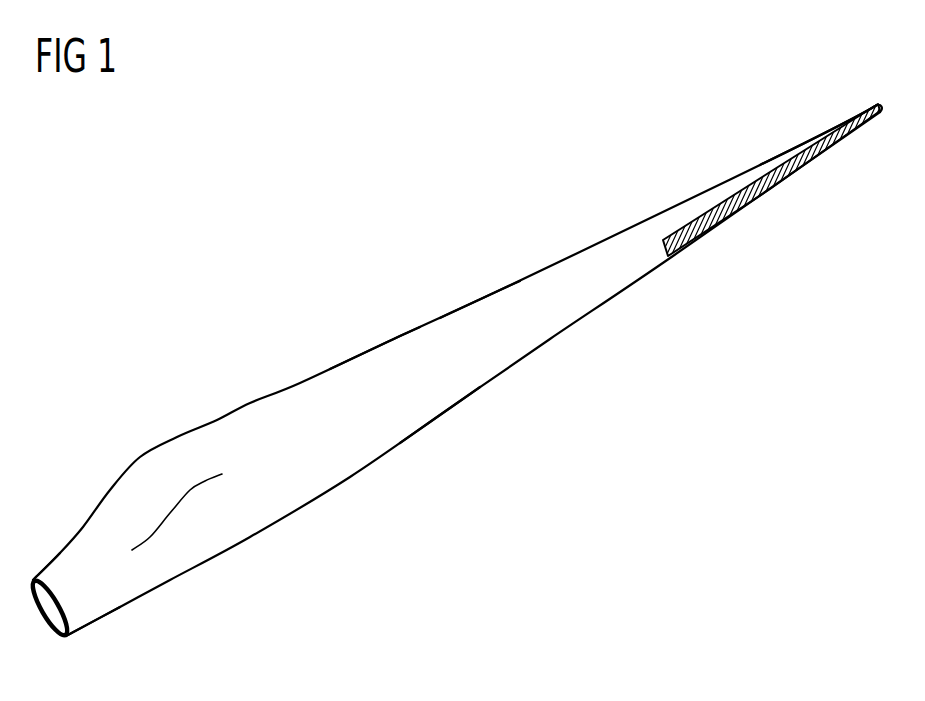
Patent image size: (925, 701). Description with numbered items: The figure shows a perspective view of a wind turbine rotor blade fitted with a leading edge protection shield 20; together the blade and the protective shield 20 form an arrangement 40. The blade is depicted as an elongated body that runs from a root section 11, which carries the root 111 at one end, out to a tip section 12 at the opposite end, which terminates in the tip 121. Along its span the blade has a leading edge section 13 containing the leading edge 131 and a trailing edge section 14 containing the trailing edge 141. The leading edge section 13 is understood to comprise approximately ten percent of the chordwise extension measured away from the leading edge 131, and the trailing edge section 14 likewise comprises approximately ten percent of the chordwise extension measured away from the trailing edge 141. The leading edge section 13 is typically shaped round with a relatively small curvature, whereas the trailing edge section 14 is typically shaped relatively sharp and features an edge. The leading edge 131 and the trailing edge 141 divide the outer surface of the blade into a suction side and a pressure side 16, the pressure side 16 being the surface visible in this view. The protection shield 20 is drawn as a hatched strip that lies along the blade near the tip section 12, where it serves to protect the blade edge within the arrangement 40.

The root section 11 is at (80, 612).
The root 111 is at (47, 639).
The tip section 12 is at (811, 141).
The tip 121 is at (882, 105).
The leading edge section 13 is at (346, 468).
The leading edge 131 is at (423, 428).
The trailing edge section 14 is at (301, 390).
The trailing edge 141 is at (357, 354).
The pressure side 16 is at (457, 344).
The leading edge protection shield 20 is at (780, 180).
The arrangement 40 is at (262, 221).